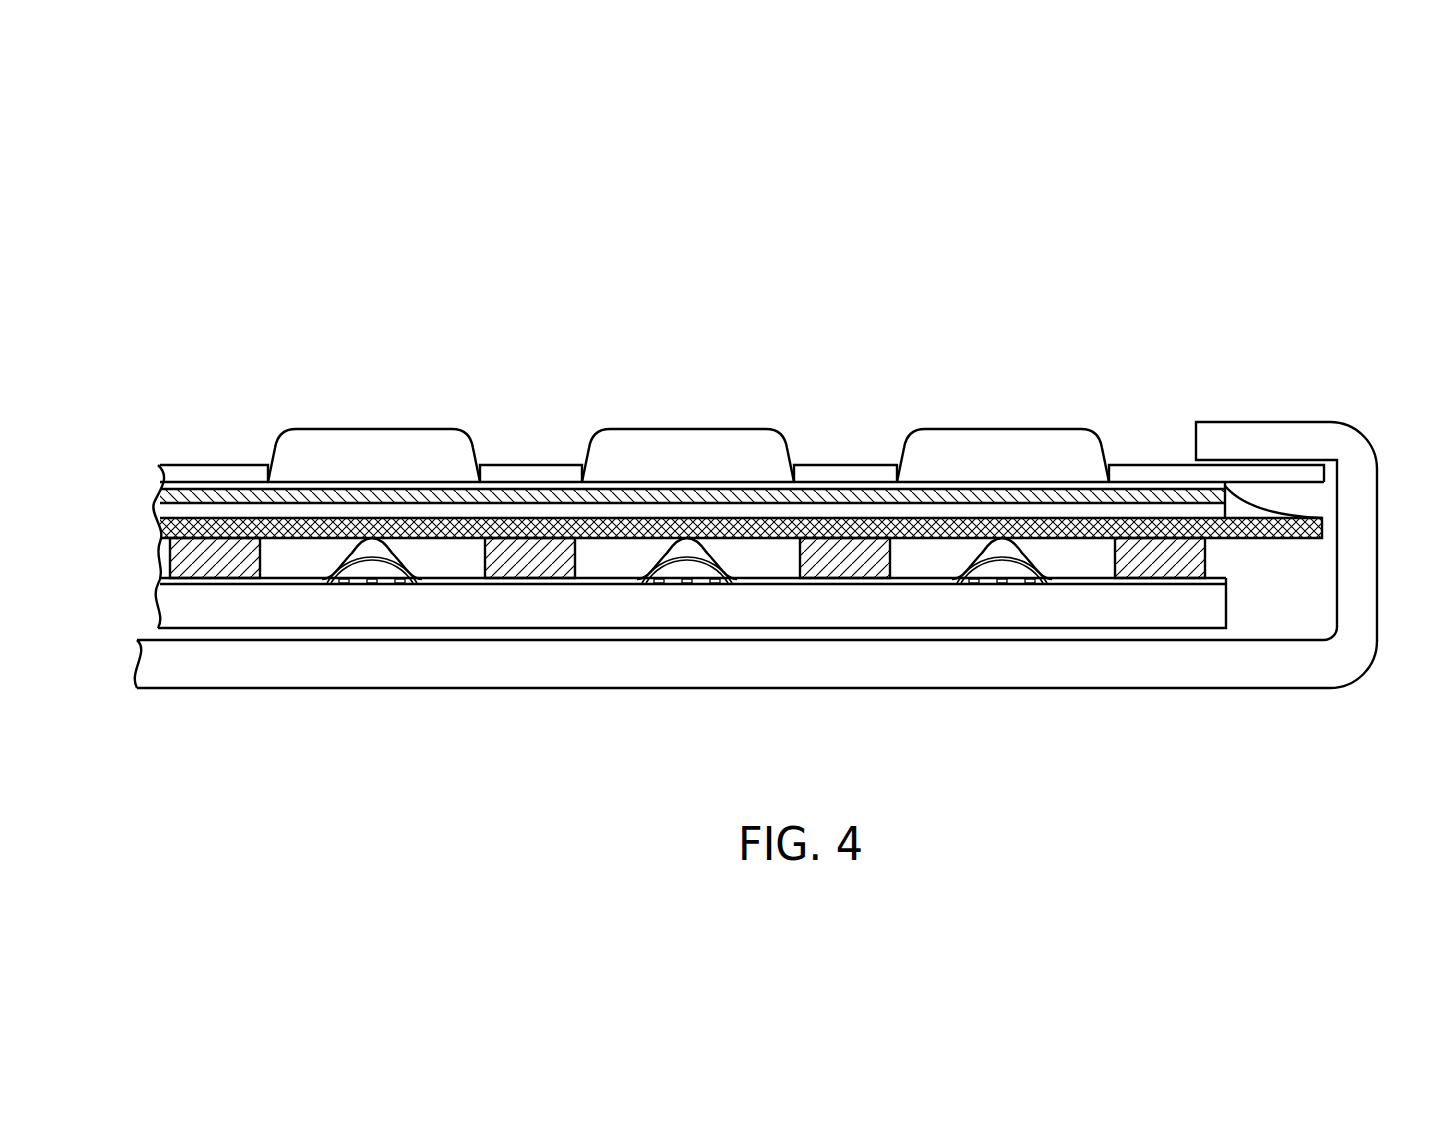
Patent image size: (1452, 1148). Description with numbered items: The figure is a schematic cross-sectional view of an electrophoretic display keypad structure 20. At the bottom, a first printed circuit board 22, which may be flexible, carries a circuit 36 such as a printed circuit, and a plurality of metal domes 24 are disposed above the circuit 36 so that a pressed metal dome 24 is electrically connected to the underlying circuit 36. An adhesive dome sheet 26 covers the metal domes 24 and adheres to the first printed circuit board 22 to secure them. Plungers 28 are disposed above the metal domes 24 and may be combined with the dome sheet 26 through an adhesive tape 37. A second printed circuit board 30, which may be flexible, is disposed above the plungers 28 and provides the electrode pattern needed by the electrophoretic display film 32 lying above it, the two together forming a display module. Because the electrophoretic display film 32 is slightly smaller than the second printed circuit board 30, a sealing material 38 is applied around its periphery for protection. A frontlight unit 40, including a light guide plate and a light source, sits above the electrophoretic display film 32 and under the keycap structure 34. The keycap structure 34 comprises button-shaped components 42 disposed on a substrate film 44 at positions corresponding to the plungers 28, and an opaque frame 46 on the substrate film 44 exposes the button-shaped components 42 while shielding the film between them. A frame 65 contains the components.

The electrophoretic display keypad structure 20 is at (1272, 268).
The first printed circuit board 22 is at (1217, 598).
The metal dome 24 is at (1020, 568).
The dome sheet 26 is at (1136, 582).
The plunger 28 is at (1007, 560).
The second printed circuit board 30 is at (1323, 522).
The electrophoretic display film 32 is at (1150, 512).
The keycap structure 34 is at (1047, 342).
The circuit 36 is at (993, 548).
The adhesive tape 37 is at (220, 563).
The sealing material 38 is at (1252, 517).
The frontlight unit 40 is at (211, 497).
The button-shaped component 42 is at (950, 440).
The substrate film 44 is at (1012, 488).
The opaque frame 46 is at (866, 473).
The frame 65 is at (603, 666).